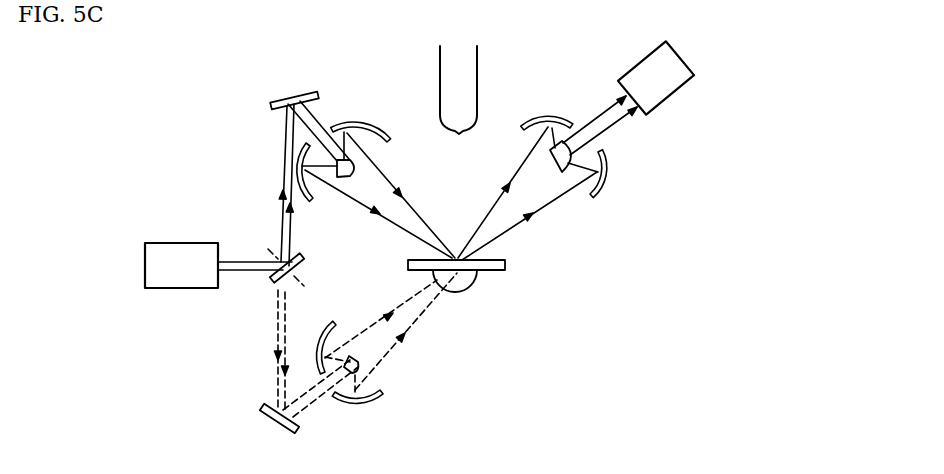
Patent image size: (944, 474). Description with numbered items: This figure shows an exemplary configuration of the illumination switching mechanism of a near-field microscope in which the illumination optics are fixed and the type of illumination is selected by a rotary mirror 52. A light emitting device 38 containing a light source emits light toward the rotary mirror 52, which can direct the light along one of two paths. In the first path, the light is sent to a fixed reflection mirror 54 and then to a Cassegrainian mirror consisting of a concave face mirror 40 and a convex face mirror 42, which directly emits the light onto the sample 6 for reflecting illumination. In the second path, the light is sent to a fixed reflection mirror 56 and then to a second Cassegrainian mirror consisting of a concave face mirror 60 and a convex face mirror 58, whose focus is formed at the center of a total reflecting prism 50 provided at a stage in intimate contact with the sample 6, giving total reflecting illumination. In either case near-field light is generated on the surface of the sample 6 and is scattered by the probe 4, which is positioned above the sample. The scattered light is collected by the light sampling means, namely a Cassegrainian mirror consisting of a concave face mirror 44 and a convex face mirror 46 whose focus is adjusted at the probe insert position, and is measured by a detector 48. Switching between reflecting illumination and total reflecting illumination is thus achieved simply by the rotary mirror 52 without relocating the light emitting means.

The probe 4 is at (479, 57).
The sample 6 is at (505, 266).
The light emitting device 38 is at (175, 243).
The concave face mirror 40 is at (371, 122).
The convex face mirror 42 is at (357, 177).
The concave face mirror 44 is at (604, 168).
The convex face mirror 46 is at (562, 170).
The detector 48 is at (681, 88).
The total reflecting prism 50 is at (475, 283).
The rotary mirror 52 is at (301, 257).
The reflection mirror 54 is at (281, 101).
The reflection mirror 56 is at (277, 419).
The convex face mirror 58 is at (363, 362).
The concave face mirror 60 is at (383, 395).